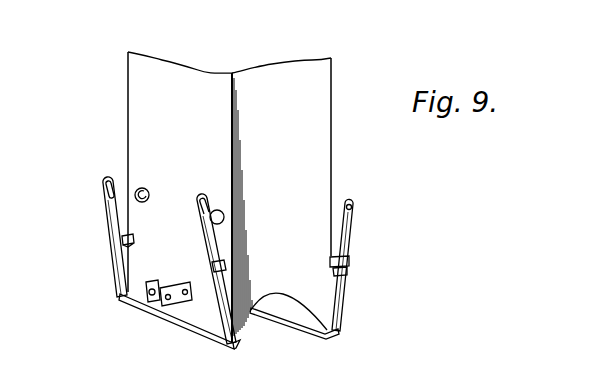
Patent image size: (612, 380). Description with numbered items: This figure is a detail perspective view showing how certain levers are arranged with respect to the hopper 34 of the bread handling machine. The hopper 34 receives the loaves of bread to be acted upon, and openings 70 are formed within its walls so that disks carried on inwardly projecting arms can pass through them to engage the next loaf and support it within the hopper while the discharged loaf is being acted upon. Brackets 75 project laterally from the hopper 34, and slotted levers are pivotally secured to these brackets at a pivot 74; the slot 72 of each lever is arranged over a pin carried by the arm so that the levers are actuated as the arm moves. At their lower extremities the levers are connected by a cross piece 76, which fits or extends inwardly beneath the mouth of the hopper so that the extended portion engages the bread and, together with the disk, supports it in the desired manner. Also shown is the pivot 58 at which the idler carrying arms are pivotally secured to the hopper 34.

The hopper 34 is at (272, 82).
The pivotal securing point of arms 58 is at (150, 297).
The openings 70 is at (146, 190).
The slot 72 is at (108, 218).
The pivotal securing point of slotted lever 74 is at (350, 262).
The brackets 75 is at (348, 272).
The cross piece 76 is at (180, 316).